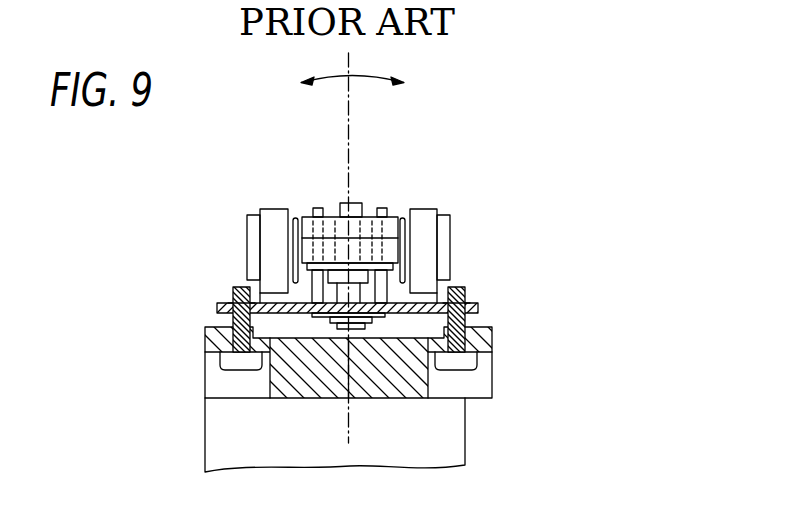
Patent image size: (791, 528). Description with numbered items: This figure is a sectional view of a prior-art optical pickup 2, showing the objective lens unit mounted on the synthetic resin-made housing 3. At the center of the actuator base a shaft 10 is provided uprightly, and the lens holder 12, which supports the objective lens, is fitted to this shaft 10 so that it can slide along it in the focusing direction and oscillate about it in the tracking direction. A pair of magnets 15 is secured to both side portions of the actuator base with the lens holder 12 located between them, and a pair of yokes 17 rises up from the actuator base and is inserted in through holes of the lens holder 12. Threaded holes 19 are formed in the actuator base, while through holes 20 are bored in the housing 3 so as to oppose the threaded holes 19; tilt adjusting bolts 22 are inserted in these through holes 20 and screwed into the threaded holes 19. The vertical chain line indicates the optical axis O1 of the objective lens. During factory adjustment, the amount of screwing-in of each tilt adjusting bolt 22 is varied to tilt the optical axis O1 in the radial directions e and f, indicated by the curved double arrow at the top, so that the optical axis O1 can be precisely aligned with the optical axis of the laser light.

The optical pickup 2 is at (350, 236).
The housing 3 is at (213, 435).
The shaft 10 is at (346, 203).
The lens holder 12 is at (368, 203).
The magnets 15 is at (272, 210).
The yokes 17 is at (316, 208).
The threaded holes 19 is at (233, 300).
The through holes 20 is at (218, 320).
The tilt adjusting bolts 22 is at (238, 287).
The optical axis of the objective lens O1 is at (349, 108).
The radial direction e is at (343, 83).
The radial direction f is at (402, 83).